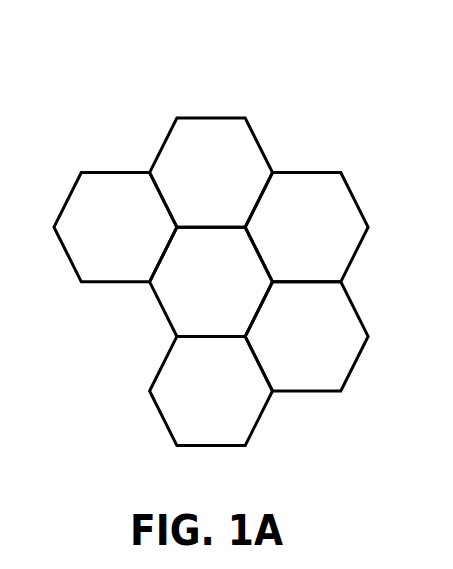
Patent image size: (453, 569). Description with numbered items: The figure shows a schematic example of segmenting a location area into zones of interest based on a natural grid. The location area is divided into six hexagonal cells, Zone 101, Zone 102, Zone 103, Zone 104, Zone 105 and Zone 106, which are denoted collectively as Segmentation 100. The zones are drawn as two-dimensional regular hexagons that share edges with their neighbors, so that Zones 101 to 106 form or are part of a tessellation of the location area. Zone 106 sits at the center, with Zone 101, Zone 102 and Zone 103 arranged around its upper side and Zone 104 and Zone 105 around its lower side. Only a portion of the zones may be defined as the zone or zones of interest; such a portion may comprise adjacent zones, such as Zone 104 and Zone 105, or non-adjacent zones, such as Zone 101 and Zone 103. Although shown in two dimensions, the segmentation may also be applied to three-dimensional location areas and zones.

The segmentation 100 is at (110, 92).
The zone 101 is at (120, 172).
The zone 102 is at (250, 126).
The zone 103 is at (347, 184).
The zone 104 is at (353, 307).
The zone 105 is at (257, 424).
The zone 106 is at (160, 304).